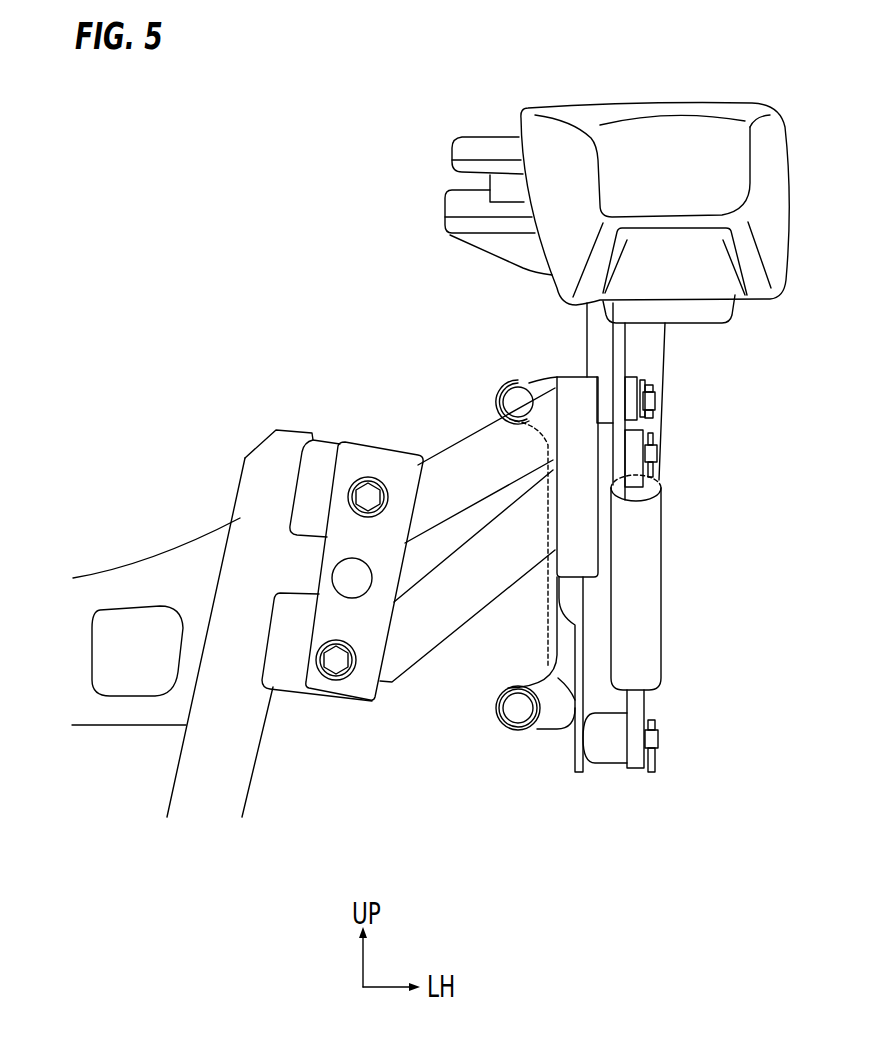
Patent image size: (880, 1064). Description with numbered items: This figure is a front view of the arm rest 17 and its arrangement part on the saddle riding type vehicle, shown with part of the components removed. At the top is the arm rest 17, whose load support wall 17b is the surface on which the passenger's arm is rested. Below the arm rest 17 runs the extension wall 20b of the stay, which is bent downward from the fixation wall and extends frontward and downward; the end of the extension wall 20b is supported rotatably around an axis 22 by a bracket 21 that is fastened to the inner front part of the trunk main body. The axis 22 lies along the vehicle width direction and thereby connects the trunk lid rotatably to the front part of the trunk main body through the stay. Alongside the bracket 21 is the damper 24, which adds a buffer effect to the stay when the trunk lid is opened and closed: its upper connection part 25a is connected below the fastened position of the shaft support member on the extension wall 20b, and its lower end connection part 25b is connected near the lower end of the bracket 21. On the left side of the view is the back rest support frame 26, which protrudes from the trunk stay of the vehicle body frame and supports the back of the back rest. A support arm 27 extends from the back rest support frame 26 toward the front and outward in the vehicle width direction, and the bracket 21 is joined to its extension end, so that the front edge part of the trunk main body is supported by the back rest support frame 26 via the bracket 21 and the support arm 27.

The arm rest 17 is at (631, 168).
The load support wall 17b is at (648, 102).
The extension wall 20b is at (622, 355).
The bracket 21 is at (578, 700).
The axis 22 is at (652, 400).
The damper 24 is at (643, 605).
The upper connection part 25a is at (657, 452).
The lower end connection part 25b is at (660, 740).
The back rest support frame 26 is at (233, 490).
The support arm 27 is at (445, 503).